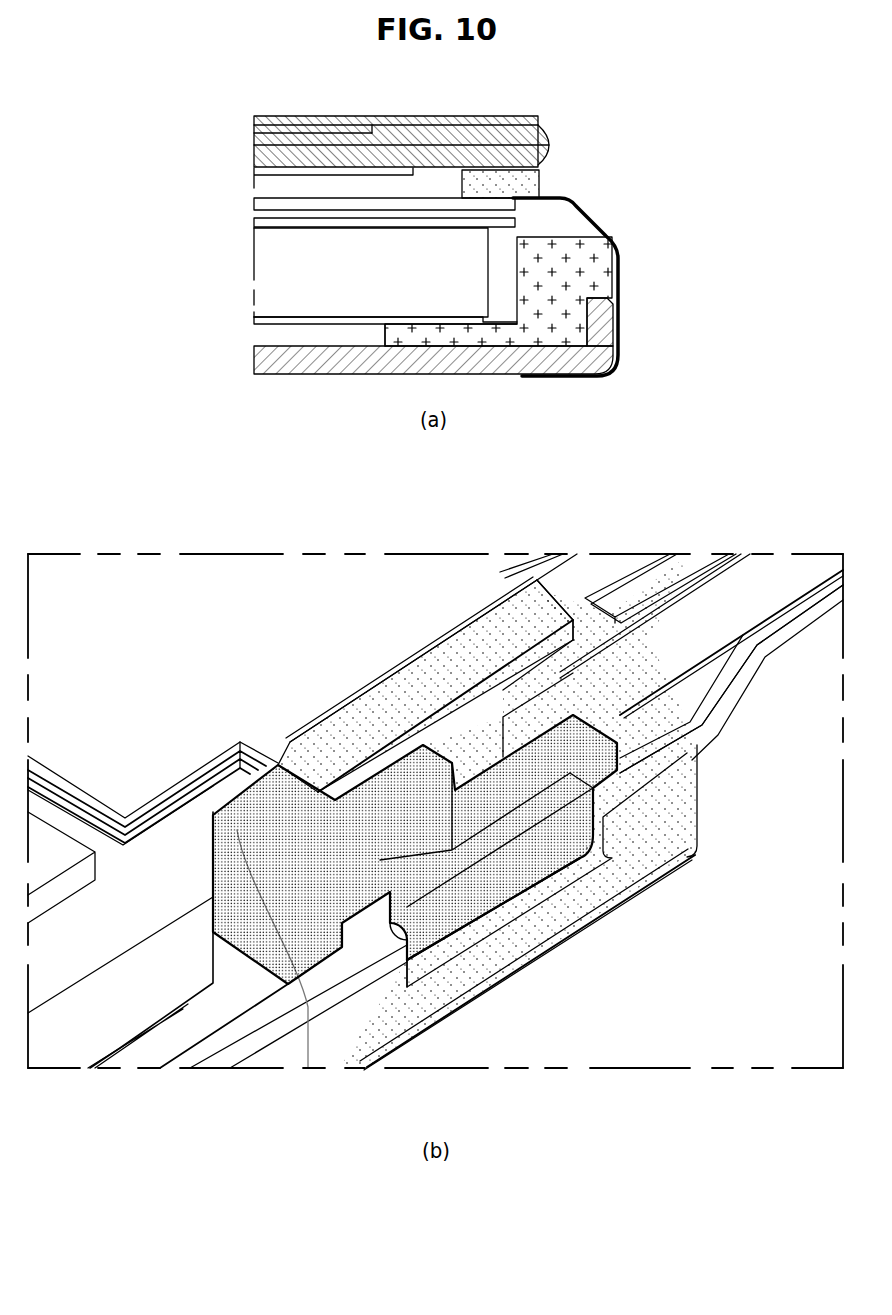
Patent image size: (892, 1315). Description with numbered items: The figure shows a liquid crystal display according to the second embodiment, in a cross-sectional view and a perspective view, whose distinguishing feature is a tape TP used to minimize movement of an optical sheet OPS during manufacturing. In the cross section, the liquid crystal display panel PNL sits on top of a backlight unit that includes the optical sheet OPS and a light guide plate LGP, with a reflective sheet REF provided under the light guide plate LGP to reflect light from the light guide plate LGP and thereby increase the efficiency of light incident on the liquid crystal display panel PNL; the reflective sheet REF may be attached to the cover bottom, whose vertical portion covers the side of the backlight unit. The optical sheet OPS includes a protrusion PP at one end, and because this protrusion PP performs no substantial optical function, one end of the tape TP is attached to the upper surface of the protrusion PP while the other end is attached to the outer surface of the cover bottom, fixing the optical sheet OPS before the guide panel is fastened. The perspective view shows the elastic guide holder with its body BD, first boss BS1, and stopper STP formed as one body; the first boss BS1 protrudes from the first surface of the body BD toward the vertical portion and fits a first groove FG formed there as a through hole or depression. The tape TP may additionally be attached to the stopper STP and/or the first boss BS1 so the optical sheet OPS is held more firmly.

The liquid crystal display panel PNL is at (249, 118).
The optical sheet OPS is at (249, 198).
The light guide plate LGP is at (282, 263).
The reflective sheet REF is at (282, 318).
The protrusion PP is at (506, 228).
The tape TP is at (597, 217).
The stopper STP is at (240, 835).
The body BD is at (283, 930).
The first groove FG is at (446, 956).
The first boss BS1 is at (487, 880).